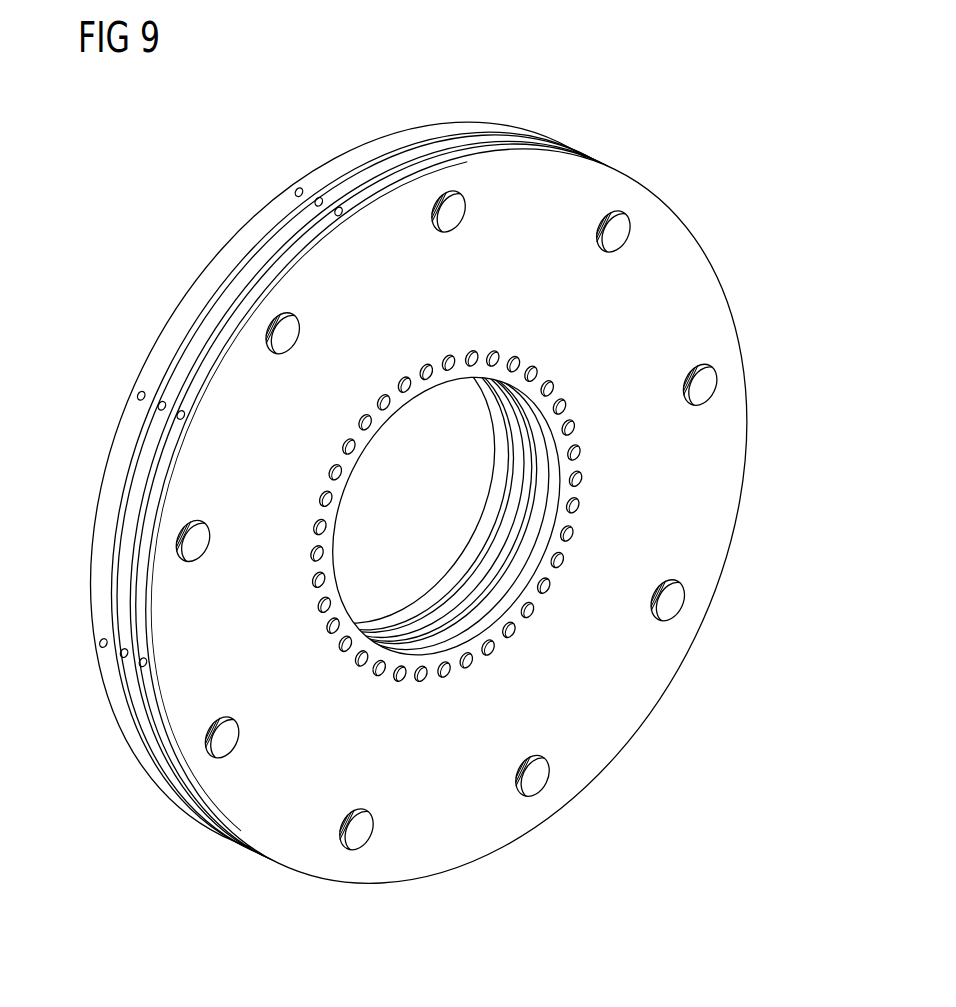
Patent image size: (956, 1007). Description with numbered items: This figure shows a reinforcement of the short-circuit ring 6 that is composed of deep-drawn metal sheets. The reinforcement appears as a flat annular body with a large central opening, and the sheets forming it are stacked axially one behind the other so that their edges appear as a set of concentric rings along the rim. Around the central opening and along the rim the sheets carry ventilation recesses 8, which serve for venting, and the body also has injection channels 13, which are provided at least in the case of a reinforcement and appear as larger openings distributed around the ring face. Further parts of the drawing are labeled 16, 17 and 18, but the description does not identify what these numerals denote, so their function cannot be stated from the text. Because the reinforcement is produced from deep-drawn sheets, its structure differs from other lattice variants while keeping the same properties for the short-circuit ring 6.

The short-circuit ring 6 is at (432, 503).
The ventilation recesses 8 is at (298, 186).
The injection channels 13 is at (718, 395).
The disc 16 is at (614, 733).
The ring 17 is at (373, 158).
The ring 18 is at (227, 250).